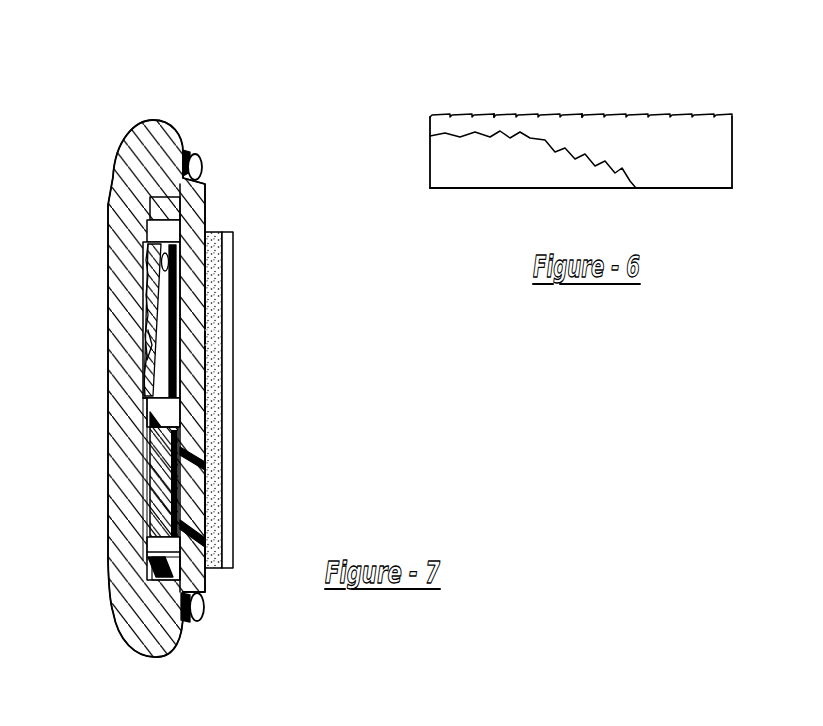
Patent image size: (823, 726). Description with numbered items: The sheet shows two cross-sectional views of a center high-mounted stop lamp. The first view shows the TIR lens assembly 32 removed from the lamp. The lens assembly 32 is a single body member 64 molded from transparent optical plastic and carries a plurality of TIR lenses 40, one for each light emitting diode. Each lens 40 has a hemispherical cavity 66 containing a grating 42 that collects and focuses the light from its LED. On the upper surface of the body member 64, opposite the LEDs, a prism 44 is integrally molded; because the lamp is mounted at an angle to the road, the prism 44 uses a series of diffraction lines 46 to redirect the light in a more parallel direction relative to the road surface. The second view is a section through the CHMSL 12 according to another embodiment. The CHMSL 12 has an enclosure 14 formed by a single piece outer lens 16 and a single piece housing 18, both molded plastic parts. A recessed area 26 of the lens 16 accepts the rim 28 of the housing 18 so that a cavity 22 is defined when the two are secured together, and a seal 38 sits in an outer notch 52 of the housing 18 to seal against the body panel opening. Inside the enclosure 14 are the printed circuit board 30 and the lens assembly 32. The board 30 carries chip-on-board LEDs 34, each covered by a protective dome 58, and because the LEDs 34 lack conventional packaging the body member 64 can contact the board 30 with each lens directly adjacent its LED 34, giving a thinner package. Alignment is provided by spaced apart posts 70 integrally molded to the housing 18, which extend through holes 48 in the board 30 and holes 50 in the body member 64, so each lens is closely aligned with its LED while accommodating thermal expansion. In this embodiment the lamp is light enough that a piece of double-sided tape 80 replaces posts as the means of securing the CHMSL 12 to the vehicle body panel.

In FIG. 7, the CHMSL 12 is at (213, 388).
In FIG. 7, the enclosure 14 is at (113, 388).
In FIG. 7, the outer lens 16 is at (110, 187).
In FIG. 7, the housing 18 is at (208, 275).
In FIG. 7, the cavity 22 is at (173, 232).
In FIG. 7, the recessed area 26 is at (147, 547).
In FIG. 7, the rim 28 is at (163, 553).
In FIG. 7, the printed circuit board 30 is at (208, 338).
In FIG. 7, the TIR lens assembly 32 is at (147, 400).
In FIG. 6, the TIR lens assembly 32 is at (552, 129).
In FIG. 7, the LED 34 is at (147, 263).
In FIG. 7, the seal 38 is at (204, 607).
In FIG. 6, the TIR lens 40 is at (697, 138).
In FIG. 6, the grating 42 is at (504, 130).
In FIG. 7, the prism 44 is at (163, 262).
In FIG. 6, the prism 44 is at (505, 117).
In FIG. 7, the diffraction lines 46 is at (147, 338).
In FIG. 6, the diffraction lines 46 is at (583, 117).
In FIG. 7, the hole 48 is at (185, 478).
In FIG. 7, the hole 50 is at (147, 423).
In FIG. 7, the outer notch 52 is at (203, 167).
In FIG. 7, the dome 58 is at (148, 245).
In FIG. 7, the body member 64 is at (157, 357).
In FIG. 6, the body member 64 is at (684, 170).
In FIG. 7, the hemispherical cavity 66 is at (168, 287).
In FIG. 6, the hemispherical cavity 66 is at (453, 162).
In FIG. 7, the post 70 is at (180, 423).
In FIG. 7, the double-sided tape 80 is at (233, 370).